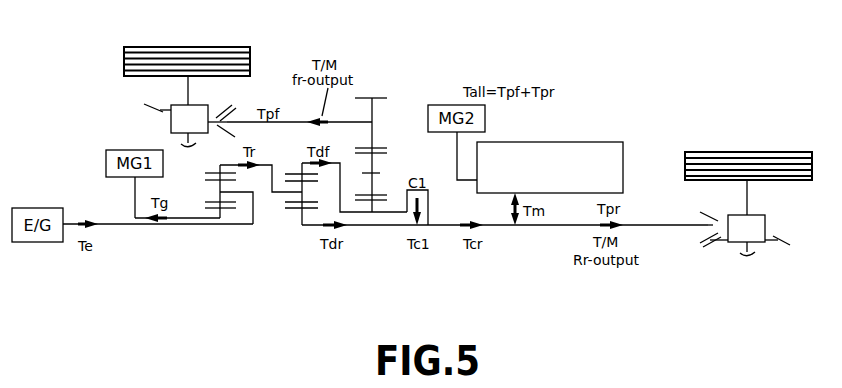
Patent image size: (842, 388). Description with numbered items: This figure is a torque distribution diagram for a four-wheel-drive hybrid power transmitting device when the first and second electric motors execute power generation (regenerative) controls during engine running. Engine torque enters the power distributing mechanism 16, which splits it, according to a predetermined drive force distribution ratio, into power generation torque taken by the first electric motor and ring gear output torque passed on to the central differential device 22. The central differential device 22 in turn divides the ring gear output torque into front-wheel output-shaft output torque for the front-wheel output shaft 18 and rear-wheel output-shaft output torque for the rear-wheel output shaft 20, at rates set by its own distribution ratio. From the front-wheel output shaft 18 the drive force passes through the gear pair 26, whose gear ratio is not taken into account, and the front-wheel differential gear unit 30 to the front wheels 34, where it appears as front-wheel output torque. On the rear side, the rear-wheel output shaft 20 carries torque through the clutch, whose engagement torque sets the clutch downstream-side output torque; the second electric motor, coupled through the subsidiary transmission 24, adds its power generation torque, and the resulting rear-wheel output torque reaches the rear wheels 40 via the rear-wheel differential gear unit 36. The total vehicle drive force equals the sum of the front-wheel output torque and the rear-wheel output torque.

The power distributing mechanism 16 is at (227, 256).
The front-wheel output shaft 18 is at (340, 195).
The rear-wheel output shaft 20 is at (370, 227).
The central differential device 22 is at (305, 256).
The subsidiary transmission 24 is at (620, 158).
The gear pair 26 is at (400, 148).
The front-wheel differential gear unit 30 is at (143, 126).
The front wheels 34 is at (182, 60).
The rear-wheel differential gear unit 36 is at (696, 211).
The rear wheels 40 is at (767, 165).